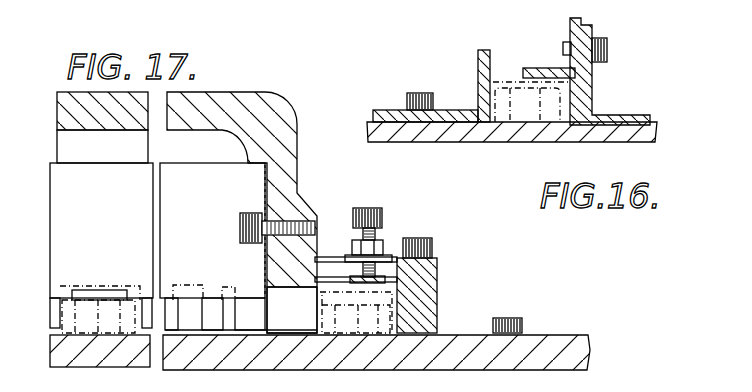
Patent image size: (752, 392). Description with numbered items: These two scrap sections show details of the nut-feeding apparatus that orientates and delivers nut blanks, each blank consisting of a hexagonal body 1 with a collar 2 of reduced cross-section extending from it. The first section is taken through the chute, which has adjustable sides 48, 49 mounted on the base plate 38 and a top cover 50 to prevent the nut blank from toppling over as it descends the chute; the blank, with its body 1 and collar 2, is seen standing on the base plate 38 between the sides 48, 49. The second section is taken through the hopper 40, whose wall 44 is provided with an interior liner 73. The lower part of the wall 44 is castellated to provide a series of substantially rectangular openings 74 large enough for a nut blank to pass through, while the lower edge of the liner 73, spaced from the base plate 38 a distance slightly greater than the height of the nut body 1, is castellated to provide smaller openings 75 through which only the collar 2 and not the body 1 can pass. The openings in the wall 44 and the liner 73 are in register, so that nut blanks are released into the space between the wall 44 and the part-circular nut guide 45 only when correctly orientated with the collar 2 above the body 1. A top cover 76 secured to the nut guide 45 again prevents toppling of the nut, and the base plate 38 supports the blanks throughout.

In FIG. 17, the hexagonal body 1 is at (93, 312).
In FIG. 16, the hexagonal body 1 is at (528, 118).
In FIG. 17, the collar 2 is at (110, 298).
In FIG. 16, the collar 2 is at (507, 87).
In FIG. 17, the base plate 38 is at (533, 350).
In FIG. 16, the base plate 38 is at (422, 132).
In FIG. 17, the hopper 40 is at (232, 95).
In FIG. 17, the wall 44 is at (292, 188).
In FIG. 17, the nut guide 45 is at (423, 305).
In FIG. 16, the adjustable side 48 is at (592, 92).
In FIG. 16, the adjustable side 49 is at (477, 75).
In FIG. 16, the top cover 50 is at (533, 66).
In FIG. 17, the interior liner 73 is at (262, 252).
In FIG. 17, the openings 74 is at (181, 285).
In FIG. 17, the openings 75 is at (258, 290).
In FIG. 17, the top cover 76 is at (378, 276).